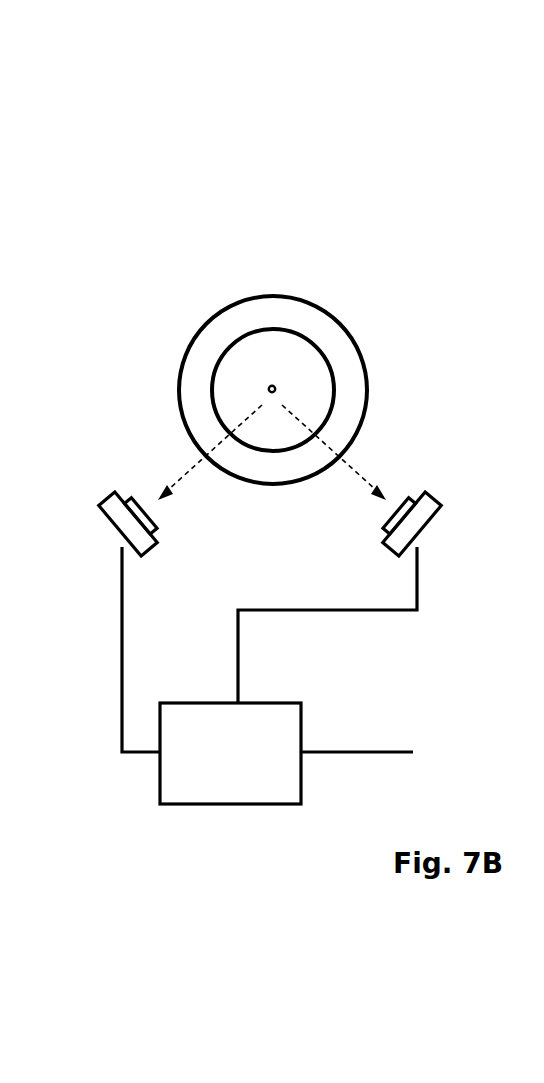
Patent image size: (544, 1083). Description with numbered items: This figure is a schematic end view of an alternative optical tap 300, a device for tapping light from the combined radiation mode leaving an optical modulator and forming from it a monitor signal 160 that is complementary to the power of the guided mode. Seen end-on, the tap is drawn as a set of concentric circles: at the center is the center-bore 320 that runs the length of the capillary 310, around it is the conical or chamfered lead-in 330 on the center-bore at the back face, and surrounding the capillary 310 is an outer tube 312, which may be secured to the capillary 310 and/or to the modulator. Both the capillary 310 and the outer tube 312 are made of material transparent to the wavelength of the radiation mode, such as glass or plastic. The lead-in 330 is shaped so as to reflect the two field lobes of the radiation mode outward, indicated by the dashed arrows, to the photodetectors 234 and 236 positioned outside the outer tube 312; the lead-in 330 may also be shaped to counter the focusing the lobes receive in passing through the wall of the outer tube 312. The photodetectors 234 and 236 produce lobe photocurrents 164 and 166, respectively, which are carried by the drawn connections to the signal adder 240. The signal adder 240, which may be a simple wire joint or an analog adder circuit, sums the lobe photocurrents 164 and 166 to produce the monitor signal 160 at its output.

The optical tap 300 is at (276, 425).
The capillary 310 is at (246, 337).
The outer tube 312 is at (308, 345).
The center-bore 320 is at (248, 299).
The lead-in 330 is at (285, 329).
The photodetector 234 is at (408, 471).
The photodetector 236 is at (125, 470).
The lobe photocurrent 164 is at (327, 619).
The lobe photocurrent 166 is at (168, 644).
The signal adder 240 is at (227, 705).
The monitor signal 160 is at (375, 700).